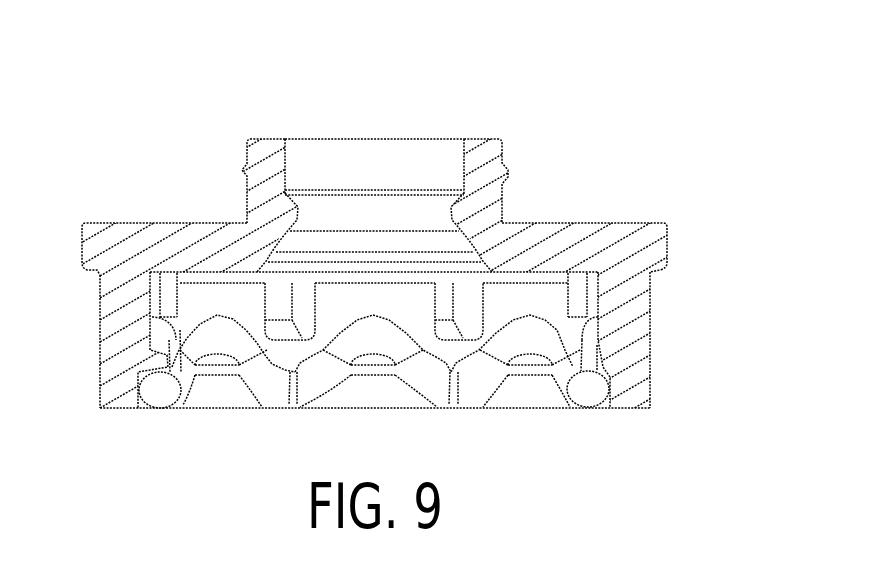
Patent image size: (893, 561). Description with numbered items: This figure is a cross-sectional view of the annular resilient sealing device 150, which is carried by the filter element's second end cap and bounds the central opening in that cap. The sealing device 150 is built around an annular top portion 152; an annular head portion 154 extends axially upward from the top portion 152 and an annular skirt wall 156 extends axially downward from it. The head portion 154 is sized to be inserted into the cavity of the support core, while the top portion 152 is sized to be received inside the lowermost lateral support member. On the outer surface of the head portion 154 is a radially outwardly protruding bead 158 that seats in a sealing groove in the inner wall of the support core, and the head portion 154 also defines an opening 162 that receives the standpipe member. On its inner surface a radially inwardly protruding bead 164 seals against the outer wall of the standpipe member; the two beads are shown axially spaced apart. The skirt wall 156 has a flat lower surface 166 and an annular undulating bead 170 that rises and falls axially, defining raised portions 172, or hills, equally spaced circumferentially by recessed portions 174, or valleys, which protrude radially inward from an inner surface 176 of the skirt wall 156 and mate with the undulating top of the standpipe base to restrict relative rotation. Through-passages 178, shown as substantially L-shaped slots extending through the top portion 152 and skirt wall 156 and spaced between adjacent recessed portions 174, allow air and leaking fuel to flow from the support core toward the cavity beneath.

The annular resilient sealing device 150 is at (722, 150).
The top portion 152 is at (623, 223).
The head portion 154 is at (492, 200).
The skirt wall 156 is at (640, 357).
The radially outwardly protruding bead 158 is at (246, 179).
The opening 162 is at (432, 137).
The radially inwardly protruding bead 164 is at (296, 215).
The flat lower surface 166 is at (118, 408).
The annular undulating bead 170 is at (250, 405).
The raised portions 172 is at (475, 407).
The recessed portions 174 is at (375, 345).
The inner surface 176 is at (203, 407).
The through-passages 178 is at (582, 297).